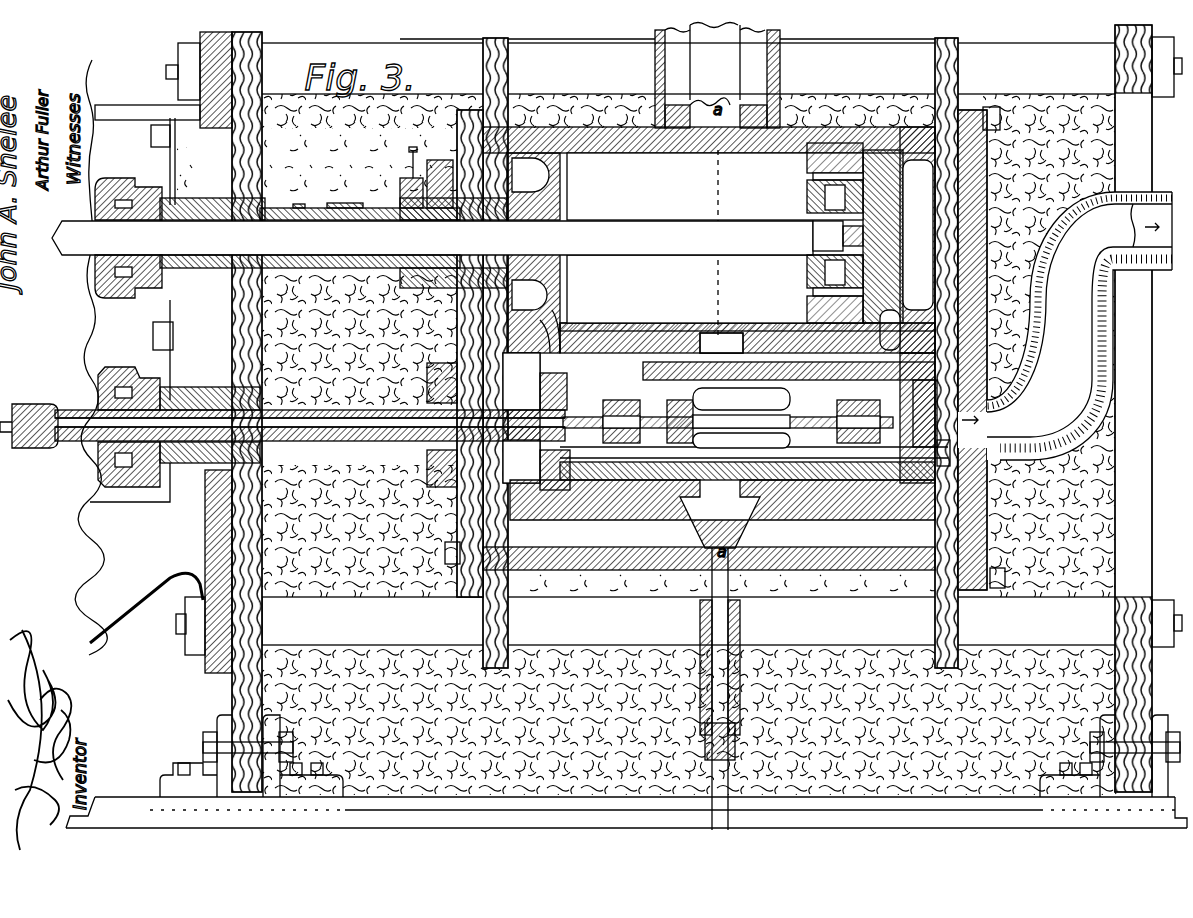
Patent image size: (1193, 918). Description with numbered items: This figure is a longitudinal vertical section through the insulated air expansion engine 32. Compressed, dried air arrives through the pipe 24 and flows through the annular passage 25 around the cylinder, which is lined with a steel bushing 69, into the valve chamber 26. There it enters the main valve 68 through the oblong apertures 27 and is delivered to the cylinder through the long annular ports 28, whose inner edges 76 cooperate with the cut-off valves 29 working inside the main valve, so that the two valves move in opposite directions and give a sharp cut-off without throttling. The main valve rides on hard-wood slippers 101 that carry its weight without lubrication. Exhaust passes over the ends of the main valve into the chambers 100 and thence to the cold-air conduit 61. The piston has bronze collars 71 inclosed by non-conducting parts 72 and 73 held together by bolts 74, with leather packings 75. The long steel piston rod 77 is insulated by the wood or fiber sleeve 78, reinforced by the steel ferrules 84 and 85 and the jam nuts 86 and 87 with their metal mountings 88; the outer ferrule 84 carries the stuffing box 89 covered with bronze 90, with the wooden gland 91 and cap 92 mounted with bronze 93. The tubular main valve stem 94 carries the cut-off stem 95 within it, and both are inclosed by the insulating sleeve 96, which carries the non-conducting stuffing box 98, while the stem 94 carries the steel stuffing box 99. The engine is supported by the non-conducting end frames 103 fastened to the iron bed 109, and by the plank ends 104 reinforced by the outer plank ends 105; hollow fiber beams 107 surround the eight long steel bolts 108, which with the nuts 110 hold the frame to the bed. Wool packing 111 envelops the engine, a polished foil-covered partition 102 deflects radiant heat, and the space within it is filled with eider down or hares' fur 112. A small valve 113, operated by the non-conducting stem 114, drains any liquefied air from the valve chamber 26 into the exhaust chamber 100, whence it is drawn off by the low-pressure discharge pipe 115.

The pipe 24 is at (735, 65).
The passage 25 is at (700, 155).
The valve chamber 26 is at (695, 345).
The oblong apertures 27 is at (763, 403).
The ports 28 is at (620, 321).
The cut-off valves 29 is at (739, 415).
The engine 32 is at (830, 128).
The exhaust conduit 61 is at (1060, 440).
The main valve 68 is at (653, 490).
The bushing 69 is at (635, 158).
The collars 71 is at (795, 175).
The piston parts 72 is at (846, 186).
The piston part 73 is at (752, 258).
The bolts 74 is at (745, 324).
The packings 75 is at (870, 128).
The inner edges 76 is at (632, 396).
The piston rod 77 is at (400, 230).
The sleeve 78 is at (359, 292).
The ferrule 84 is at (278, 205).
The ferrule 85 is at (325, 272).
The jam nut 86 is at (382, 145).
The jam nut 87 is at (428, 320).
The metal mountings 88 is at (428, 146).
The stuffing box 89 is at (165, 302).
The bronze covering 90 is at (97, 207).
The gland 91 is at (92, 280).
The cap 92 is at (95, 303).
The bronze mounting 93 is at (102, 190).
The main valve stem 94 is at (348, 402).
The cut-off stem 95 is at (374, 473).
The insulating sleeve 96 is at (335, 460).
The stuffing box 98 is at (170, 490).
The stuffing box 99 is at (25, 407).
The exhaust chambers 100 is at (523, 463).
The slippers 101 is at (577, 523).
The partition 102 is at (618, 44).
The end frames 103 is at (232, 683).
The plank ends 104 is at (475, 633).
The outer plank ends 105 is at (987, 220).
The hollow beams 107 is at (358, 100).
The steel bolts 108 is at (170, 75).
The iron bed 109 is at (197, 38).
The nuts 110 is at (185, 62).
The wool packing 111 is at (327, 160).
The packing 112 is at (853, 95).
The small valve 113 is at (795, 578).
The stem 114 is at (740, 632).
The liquid discharge pipe 115 is at (750, 692).